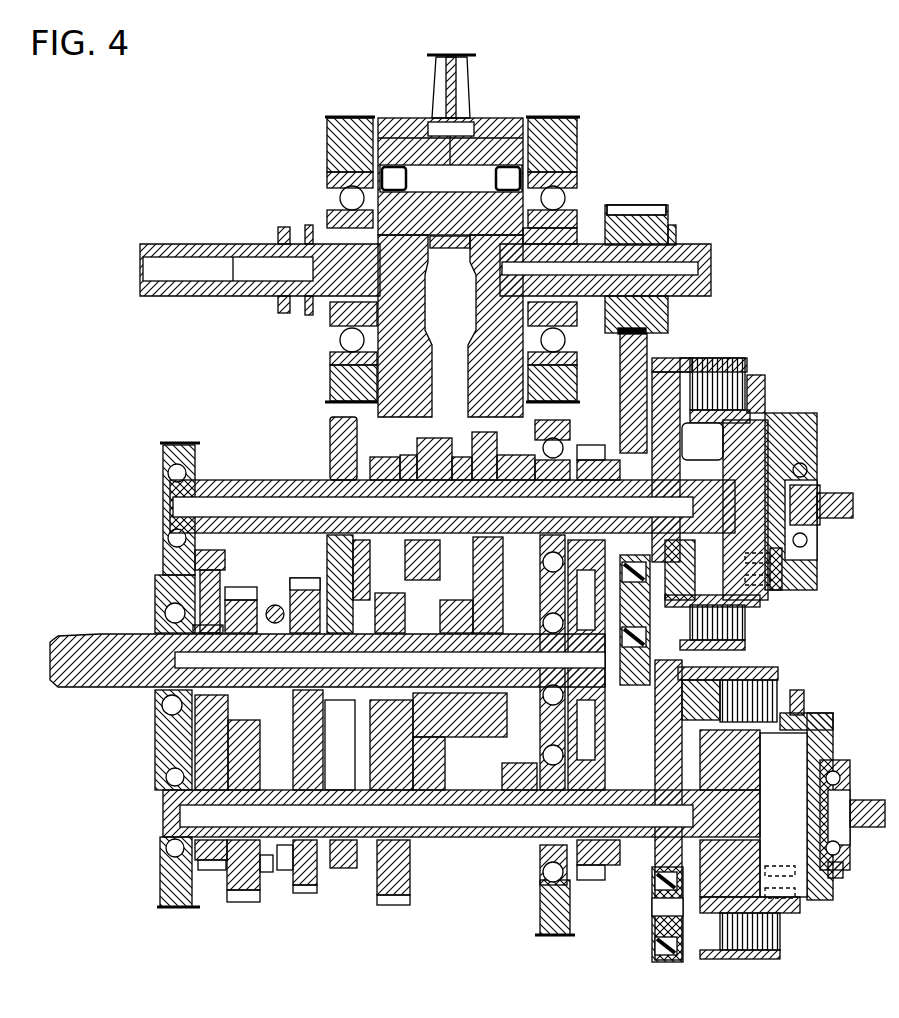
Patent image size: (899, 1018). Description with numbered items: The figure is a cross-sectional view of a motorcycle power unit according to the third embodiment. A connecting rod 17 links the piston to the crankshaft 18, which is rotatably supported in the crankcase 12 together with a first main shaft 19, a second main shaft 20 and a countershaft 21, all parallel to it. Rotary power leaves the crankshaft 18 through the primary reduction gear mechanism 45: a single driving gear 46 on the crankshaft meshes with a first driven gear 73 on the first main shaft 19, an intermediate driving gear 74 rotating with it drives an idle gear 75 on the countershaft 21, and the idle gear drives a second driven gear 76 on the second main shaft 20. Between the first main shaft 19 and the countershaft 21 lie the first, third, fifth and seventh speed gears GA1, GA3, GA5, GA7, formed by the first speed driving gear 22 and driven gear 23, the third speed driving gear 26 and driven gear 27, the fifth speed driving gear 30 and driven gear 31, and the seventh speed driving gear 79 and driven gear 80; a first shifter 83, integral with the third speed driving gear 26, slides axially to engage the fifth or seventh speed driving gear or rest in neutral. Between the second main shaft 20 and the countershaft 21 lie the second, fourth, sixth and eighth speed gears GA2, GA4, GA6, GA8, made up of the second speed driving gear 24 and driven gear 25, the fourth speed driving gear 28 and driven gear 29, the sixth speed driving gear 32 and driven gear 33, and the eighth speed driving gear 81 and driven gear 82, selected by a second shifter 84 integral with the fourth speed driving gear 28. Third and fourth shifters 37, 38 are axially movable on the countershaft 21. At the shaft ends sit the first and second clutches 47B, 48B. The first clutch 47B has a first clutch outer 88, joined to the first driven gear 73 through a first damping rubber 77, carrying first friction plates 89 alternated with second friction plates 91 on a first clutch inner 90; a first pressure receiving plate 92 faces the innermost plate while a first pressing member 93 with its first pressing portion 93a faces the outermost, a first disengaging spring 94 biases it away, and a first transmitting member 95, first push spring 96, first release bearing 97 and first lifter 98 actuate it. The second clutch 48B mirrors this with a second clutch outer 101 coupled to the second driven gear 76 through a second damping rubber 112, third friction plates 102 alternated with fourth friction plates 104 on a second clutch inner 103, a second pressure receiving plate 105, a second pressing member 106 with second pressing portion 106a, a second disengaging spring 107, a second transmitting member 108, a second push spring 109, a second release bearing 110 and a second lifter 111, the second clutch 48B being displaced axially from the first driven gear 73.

The crankcase 12 is at (343, 384).
The connecting rod 17 is at (466, 92).
The crankshaft 18 is at (698, 253).
The first main shaft 19 is at (214, 493).
The second main shaft 20 is at (173, 808).
The countershaft 21 is at (128, 653).
The first speed driving gear 22 is at (508, 466).
The first speed driven gear 23 is at (504, 760).
The second speed driving gear 24 is at (213, 872).
The second speed driven gear 25 is at (213, 564).
The third speed driving gear 26 is at (438, 453).
The third speed driven gear 27 is at (408, 608).
The fourth speed driving gear 28 is at (310, 906).
The fourth speed driven gear 29 is at (291, 740).
The fifth speed driving gear 30 is at (470, 478).
The fifth speed driven gear 31 is at (438, 741).
The sixth speed driving gear 32 is at (251, 904).
The sixth speed driven gear 33 is at (244, 591).
The third shifter 37 is at (463, 600).
The fourth shifter 38 is at (278, 614).
The primary reduction gear mechanism 45 is at (618, 215).
The driving gear 46 is at (638, 216).
The first clutch 47B is at (756, 467).
The second clutch 48B is at (737, 817).
The first driven gear 73 is at (656, 358).
The intermediate driving gear 74 is at (598, 454).
The idle gear 75 is at (560, 564).
The second driven gear 76 is at (600, 890).
The first damping rubber 77 is at (644, 680).
The seventh speed driving gear 79 is at (338, 468).
The seventh speed driven gear 80 is at (333, 741).
The eighth speed driving gear 81 is at (408, 916).
The eighth speed driven gear 82 is at (335, 586).
The first shifter 83 is at (388, 468).
The second shifter 84 is at (348, 874).
The first clutch outer 88 is at (756, 368).
The first friction plates 89 is at (733, 368).
The first clutch inner 90 is at (770, 606).
The second friction plates 91 is at (723, 436).
The first pressure receiving plate 92 is at (692, 368).
The first pressing member 93 is at (782, 424).
The first pressing portion 93a is at (770, 390).
The first disengaging spring 94 is at (730, 588).
The first transmitting member 95 is at (803, 574).
The first push spring 96 is at (776, 563).
The first release bearing 97 is at (816, 548).
The first lifter 98 is at (842, 501).
The second clutch outer 101 is at (796, 678).
The third friction plates 102 is at (768, 678).
The second clutch inner 103 is at (800, 916).
The fourth friction plates 104 is at (776, 740).
The second pressure receiving plate 105 is at (728, 953).
The second pressing member 106 is at (820, 726).
The second pressing portion 106a is at (806, 708).
The second disengaging spring 107 is at (753, 850).
The second transmitting member 108 is at (834, 770).
The second push spring 109 is at (808, 870).
The second release bearing 110 is at (846, 870).
The second lifter 111 is at (870, 836).
The second damping rubber 112 is at (698, 970).
The first speed gear GA1 is at (564, 440).
The second speed gear GA2 is at (220, 886).
The third speed gear GA3 is at (438, 781).
The fourth speed gear GA4 is at (316, 910).
The fifth speed gear GA5 is at (505, 830).
The sixth speed gear GA6 is at (249, 905).
The seventh speed gear GA7 is at (308, 431).
The eighth speed gear GA8 is at (419, 910).